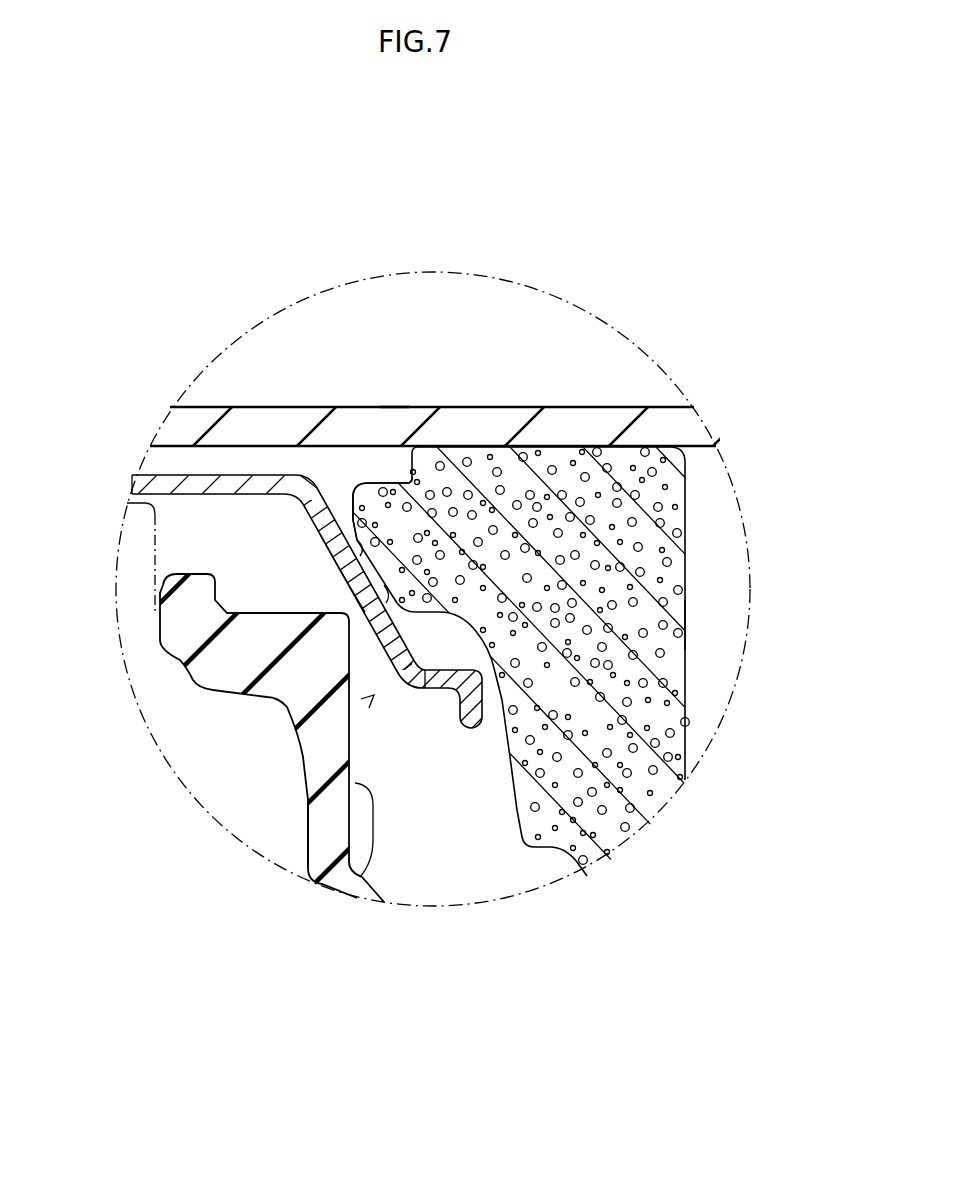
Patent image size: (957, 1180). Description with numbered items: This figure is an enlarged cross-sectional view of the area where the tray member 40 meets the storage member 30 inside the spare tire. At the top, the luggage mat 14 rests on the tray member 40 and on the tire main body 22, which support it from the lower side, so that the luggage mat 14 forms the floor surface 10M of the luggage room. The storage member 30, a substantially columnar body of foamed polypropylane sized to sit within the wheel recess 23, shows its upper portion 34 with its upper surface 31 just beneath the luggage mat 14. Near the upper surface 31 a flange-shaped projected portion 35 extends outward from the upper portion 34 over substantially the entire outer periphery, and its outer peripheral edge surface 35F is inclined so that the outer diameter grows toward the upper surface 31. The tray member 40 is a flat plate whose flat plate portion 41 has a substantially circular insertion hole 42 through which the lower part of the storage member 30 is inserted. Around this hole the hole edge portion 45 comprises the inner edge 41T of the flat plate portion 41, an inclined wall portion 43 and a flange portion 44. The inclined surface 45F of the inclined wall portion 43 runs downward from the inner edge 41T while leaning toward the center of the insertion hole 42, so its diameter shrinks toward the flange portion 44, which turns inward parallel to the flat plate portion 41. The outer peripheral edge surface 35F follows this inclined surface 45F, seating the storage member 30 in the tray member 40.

The floor surface 10M is at (395, 407).
The luggage mat 14 is at (352, 407).
The tire main body 22 is at (267, 813).
The wheel recess 23 is at (356, 783).
The storage member 30 is at (642, 532).
The upper surface 31 is at (568, 446).
The upper portion 34 is at (627, 620).
The projected portion 35 is at (365, 493).
The outer peripheral edge surface 35F is at (357, 527).
The tray member 40 is at (137, 480).
The flat plate portion 41 is at (172, 474).
The inner edge 41T is at (317, 483).
The insertion hole 42 is at (476, 731).
The inclined wall portion 43 is at (330, 556).
The flange portion 44 is at (430, 684).
The hole edge portion 45 is at (374, 695).
The inclined surface 45F is at (363, 613).